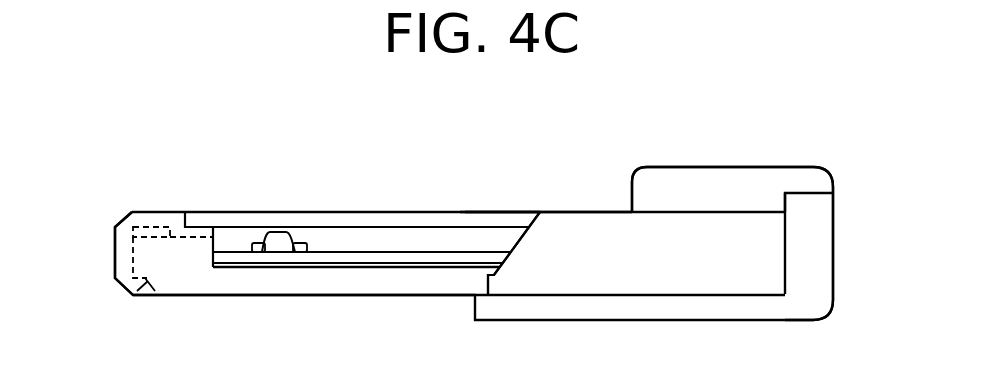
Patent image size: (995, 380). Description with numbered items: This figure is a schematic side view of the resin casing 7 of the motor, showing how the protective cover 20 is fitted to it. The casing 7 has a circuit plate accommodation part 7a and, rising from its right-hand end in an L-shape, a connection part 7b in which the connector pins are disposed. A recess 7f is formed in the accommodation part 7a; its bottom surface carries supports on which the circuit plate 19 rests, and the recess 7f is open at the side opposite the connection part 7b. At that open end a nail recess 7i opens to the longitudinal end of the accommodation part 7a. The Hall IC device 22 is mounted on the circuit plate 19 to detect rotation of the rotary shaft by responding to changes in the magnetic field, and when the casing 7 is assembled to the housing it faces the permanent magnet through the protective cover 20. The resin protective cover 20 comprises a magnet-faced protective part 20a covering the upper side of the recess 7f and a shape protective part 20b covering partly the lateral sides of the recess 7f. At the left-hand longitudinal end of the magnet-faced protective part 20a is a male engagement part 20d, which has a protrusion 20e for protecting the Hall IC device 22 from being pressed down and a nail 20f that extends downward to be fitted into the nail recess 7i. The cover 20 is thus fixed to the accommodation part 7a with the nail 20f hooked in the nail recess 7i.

The casing 7 is at (613, 185).
The circuit plate accommodation part 7a is at (355, 286).
The connection part 7b is at (722, 178).
The recess 7f is at (314, 264).
The nail recess 7i is at (150, 287).
The circuit plate 19 is at (405, 262).
The protective cover 20 is at (582, 157).
The magnet-faced protective part 20a is at (460, 212).
The shape protective part 20b is at (567, 230).
The male engagement part 20d is at (198, 157).
The protrusion 20e is at (165, 228).
The nail 20f is at (123, 257).
The Hall IC device 22 is at (278, 238).